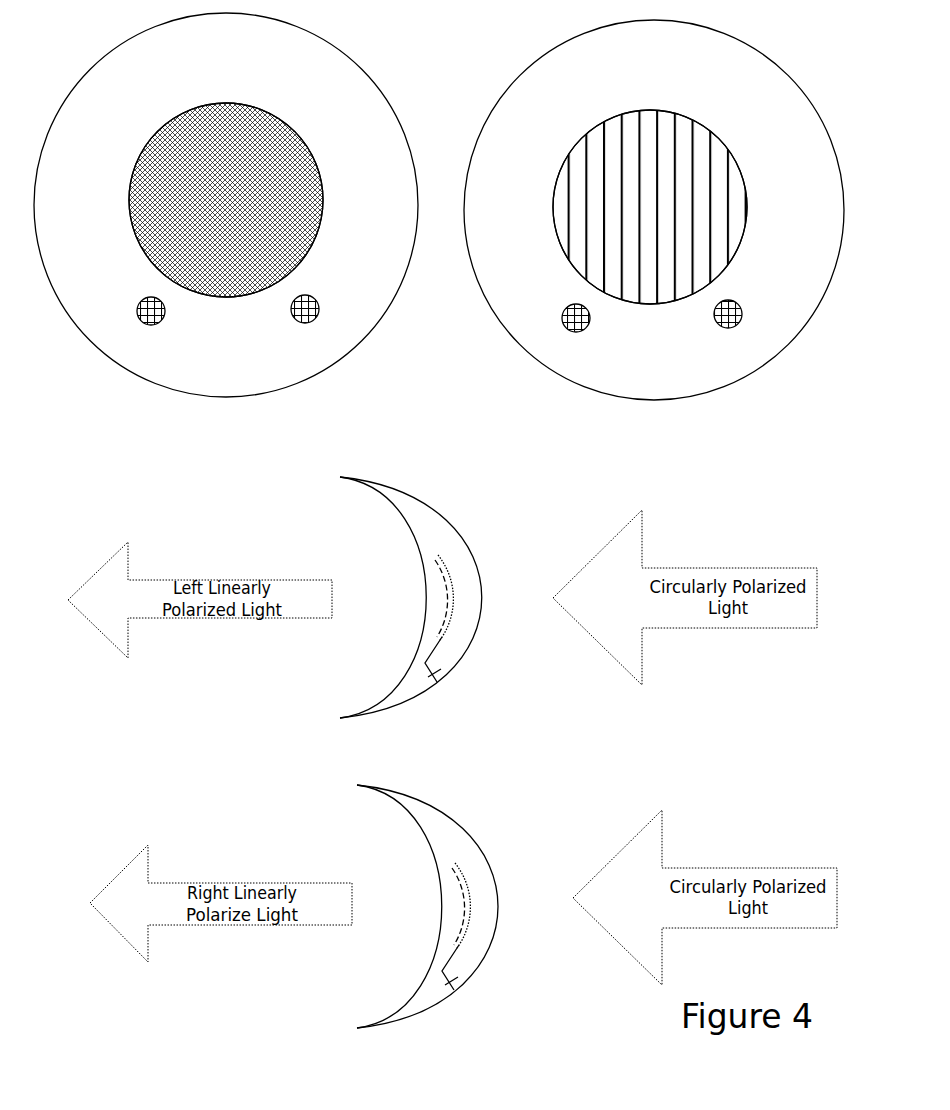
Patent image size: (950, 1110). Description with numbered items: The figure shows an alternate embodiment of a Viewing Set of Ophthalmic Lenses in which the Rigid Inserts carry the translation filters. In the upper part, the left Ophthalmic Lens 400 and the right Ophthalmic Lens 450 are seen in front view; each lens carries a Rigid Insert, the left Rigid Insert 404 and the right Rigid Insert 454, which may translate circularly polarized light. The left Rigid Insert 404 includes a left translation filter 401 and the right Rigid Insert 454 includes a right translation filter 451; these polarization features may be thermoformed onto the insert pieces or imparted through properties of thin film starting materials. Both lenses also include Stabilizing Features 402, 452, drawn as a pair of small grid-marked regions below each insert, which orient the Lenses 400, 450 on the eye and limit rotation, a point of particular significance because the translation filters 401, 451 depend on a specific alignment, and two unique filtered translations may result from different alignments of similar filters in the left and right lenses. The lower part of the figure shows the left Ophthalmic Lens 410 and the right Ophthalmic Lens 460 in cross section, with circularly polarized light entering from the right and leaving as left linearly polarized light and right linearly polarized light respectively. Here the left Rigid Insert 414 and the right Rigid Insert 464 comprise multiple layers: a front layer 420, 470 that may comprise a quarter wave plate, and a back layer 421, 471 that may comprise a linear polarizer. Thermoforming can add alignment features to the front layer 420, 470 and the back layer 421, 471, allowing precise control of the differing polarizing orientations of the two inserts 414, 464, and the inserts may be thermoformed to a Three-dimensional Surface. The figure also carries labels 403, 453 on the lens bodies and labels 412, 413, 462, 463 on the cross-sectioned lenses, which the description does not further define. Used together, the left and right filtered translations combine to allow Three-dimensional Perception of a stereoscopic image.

The left Ophthalmic Lens 400 is at (240, 224).
The left translation filter 401 is at (269, 108).
The Stabilizing Features 402 is at (309, 324).
The eyepiece frame 403 is at (356, 250).
The left Rigid Insert 404 is at (322, 175).
The right Ophthalmic Lens 450 is at (662, 227).
The right translation filter 451 is at (689, 114).
The Stabilizing Features 452 is at (723, 330).
The eyepiece frame 453 is at (761, 262).
The right Rigid Insert 454 is at (745, 180).
The left Ophthalmic Lens 410 is at (420, 594).
The lens tab 412 is at (440, 670).
The outer lens surface 413 is at (440, 535).
The left Rigid Insert 414 is at (453, 597).
The front layer 420 is at (443, 567).
The back layer 421 is at (448, 585).
The right Ophthalmic Lens 460 is at (435, 902).
The lens tab 462 is at (456, 977).
The outer lens surface 463 is at (457, 843).
The right Rigid Insert 464 is at (468, 905).
The front layer 470 is at (456, 875).
The back layer 471 is at (461, 893).